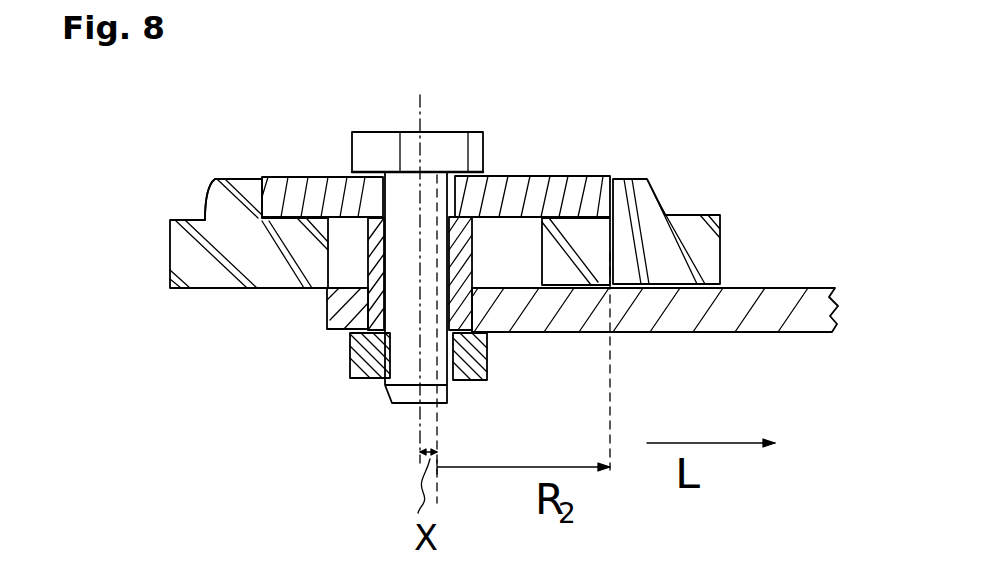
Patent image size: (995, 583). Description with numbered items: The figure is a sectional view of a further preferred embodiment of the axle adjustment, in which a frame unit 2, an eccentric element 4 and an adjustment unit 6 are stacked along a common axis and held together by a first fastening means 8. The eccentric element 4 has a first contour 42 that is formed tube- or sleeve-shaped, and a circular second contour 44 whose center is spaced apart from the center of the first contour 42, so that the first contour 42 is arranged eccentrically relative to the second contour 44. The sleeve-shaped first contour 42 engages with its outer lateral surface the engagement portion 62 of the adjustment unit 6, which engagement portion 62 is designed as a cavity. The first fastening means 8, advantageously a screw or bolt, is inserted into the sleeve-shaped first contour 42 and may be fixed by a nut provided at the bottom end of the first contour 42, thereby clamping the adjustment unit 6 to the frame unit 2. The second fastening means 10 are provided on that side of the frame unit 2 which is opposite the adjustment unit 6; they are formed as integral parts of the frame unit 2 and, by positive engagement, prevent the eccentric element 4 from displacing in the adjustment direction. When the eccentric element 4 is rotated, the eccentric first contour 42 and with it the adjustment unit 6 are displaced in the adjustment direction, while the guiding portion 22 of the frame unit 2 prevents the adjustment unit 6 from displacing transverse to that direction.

The frame unit 2 is at (200, 265).
The eccentric element 4 is at (323, 220).
The adjustment unit 6 is at (789, 323).
The first fastening means 8 is at (380, 160).
The second fastening means 10 is at (250, 198).
The guiding portion 22 is at (515, 247).
The first contour 42 is at (462, 222).
The second contour 44 is at (263, 220).
The engagement portion 62 is at (389, 310).